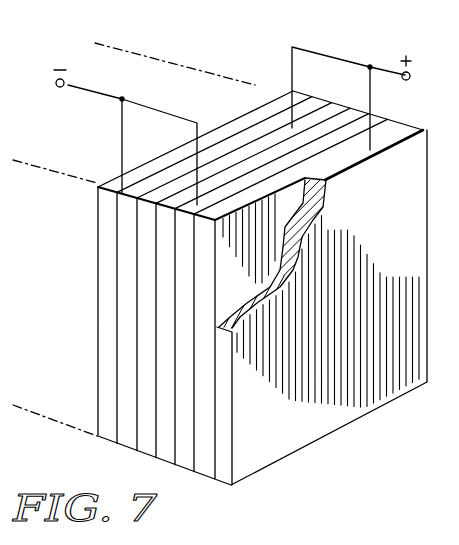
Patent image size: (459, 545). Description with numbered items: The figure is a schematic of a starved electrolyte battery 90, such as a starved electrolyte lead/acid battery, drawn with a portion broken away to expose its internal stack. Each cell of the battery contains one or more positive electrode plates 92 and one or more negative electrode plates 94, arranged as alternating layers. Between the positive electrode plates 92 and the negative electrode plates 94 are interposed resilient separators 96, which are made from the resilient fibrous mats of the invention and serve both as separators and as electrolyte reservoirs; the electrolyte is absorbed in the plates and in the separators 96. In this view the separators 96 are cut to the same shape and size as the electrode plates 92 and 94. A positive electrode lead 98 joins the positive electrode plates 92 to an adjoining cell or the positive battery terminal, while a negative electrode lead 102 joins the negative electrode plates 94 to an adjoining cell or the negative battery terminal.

The starved electrolyte battery 90 is at (271, 60).
The positive electrode plates 92 is at (145, 218).
The negative electrode plates 94 is at (108, 370).
The resilient separators 96 is at (262, 125).
The positive electrode lead 98 is at (338, 58).
The negative electrode lead 102 is at (140, 80).